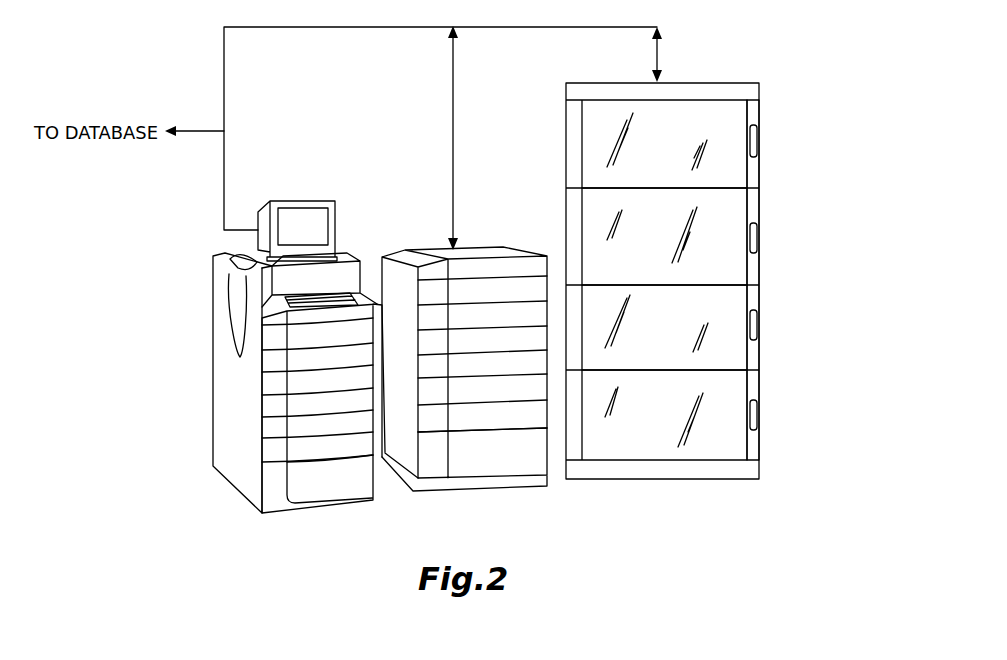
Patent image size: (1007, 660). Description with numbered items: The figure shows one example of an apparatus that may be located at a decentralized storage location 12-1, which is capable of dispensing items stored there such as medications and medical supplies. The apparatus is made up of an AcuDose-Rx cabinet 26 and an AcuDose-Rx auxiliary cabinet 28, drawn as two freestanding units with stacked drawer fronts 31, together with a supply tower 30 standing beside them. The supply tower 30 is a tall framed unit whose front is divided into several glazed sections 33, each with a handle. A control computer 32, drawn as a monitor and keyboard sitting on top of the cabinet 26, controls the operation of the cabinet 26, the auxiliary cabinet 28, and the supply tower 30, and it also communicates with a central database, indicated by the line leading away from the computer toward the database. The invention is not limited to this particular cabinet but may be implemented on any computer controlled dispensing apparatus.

The decentralized storage location 12-1 is at (714, 246).
The cabinet 26 is at (212, 308).
The auxiliary cabinet 28 is at (487, 249).
The supply tower 30 is at (760, 154).
The drawers 31 is at (433, 422).
The control computer 32 is at (303, 200).
The glass doors / shelves 33 is at (731, 328).